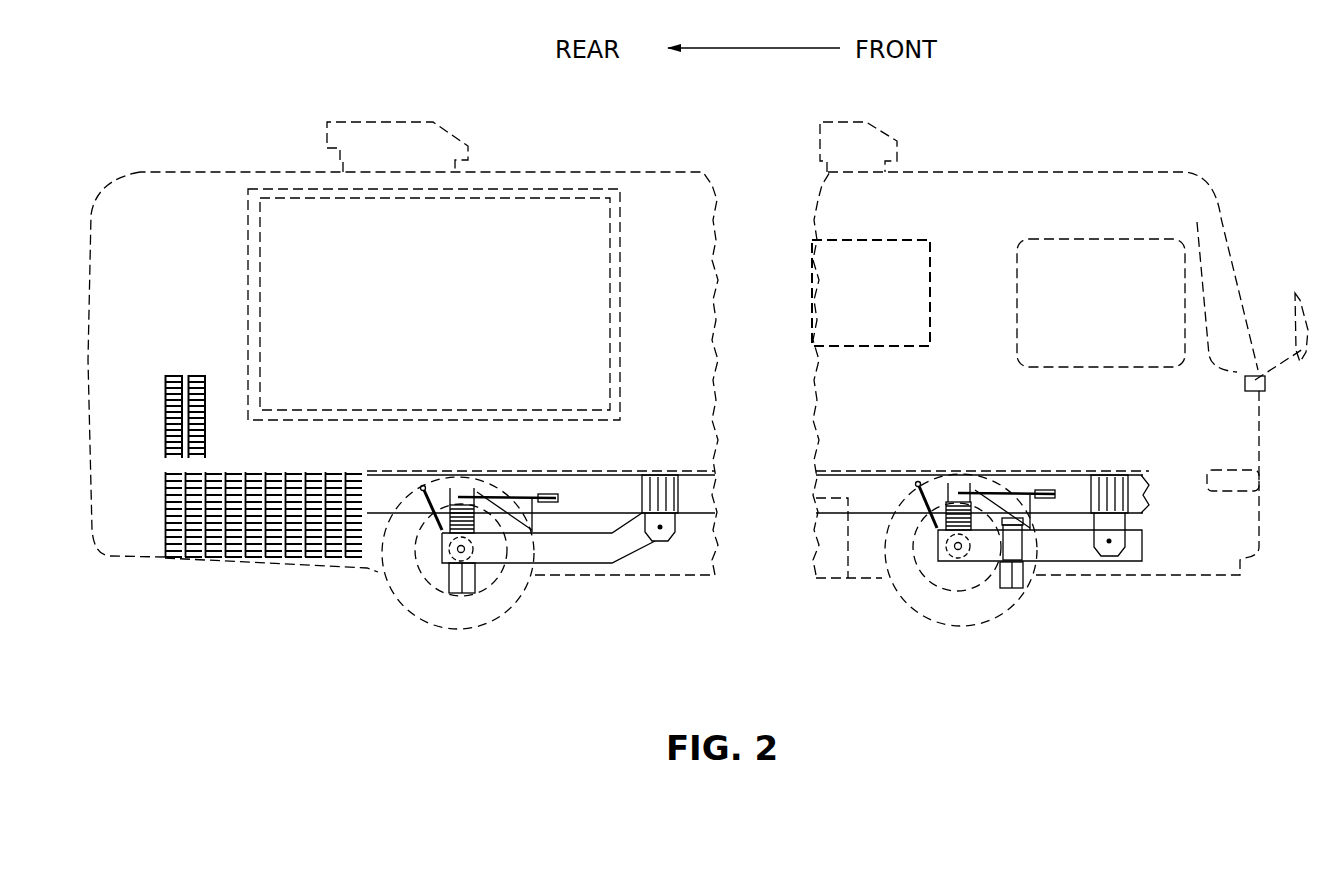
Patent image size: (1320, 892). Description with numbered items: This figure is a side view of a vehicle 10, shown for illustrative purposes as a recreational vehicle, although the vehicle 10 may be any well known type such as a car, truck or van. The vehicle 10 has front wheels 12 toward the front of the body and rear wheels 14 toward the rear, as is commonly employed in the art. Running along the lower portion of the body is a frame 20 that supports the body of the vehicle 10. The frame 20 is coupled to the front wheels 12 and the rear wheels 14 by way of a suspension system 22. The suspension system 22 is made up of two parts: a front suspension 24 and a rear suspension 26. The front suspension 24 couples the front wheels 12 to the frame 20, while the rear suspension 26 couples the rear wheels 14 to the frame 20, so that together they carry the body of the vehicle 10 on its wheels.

The vehicle 10 is at (1153, 111).
The front wheels 12 is at (961, 613).
The rear wheels 14 is at (510, 603).
The frame 20 is at (830, 490).
The suspension system 22 is at (552, 600).
The front suspension 24 is at (1012, 652).
The rear suspension 26 is at (453, 650).